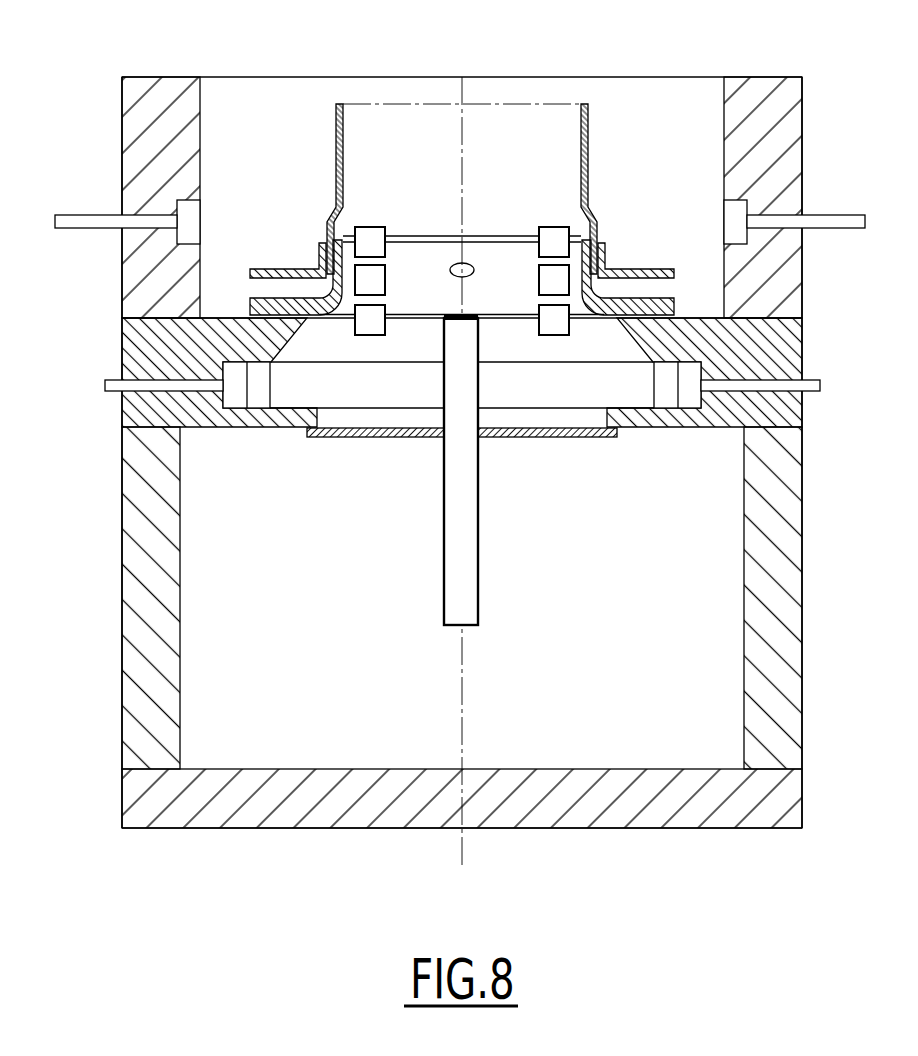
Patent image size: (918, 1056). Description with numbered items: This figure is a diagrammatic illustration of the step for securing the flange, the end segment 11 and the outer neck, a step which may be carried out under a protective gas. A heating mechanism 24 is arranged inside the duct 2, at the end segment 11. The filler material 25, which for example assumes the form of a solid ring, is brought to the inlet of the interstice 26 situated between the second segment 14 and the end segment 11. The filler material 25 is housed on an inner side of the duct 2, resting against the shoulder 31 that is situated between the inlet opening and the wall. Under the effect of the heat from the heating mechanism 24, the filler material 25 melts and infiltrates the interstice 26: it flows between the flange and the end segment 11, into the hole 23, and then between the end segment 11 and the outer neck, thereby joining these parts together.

The duct 2 is at (491, 143).
The end segment 11 is at (614, 191).
The second segment 14 is at (575, 231).
The hole 23 is at (302, 249).
The heating mechanism 24 is at (417, 342).
The filler material 25 is at (359, 203).
The interstice 26 is at (364, 217).
The shoulder 31 is at (625, 221).